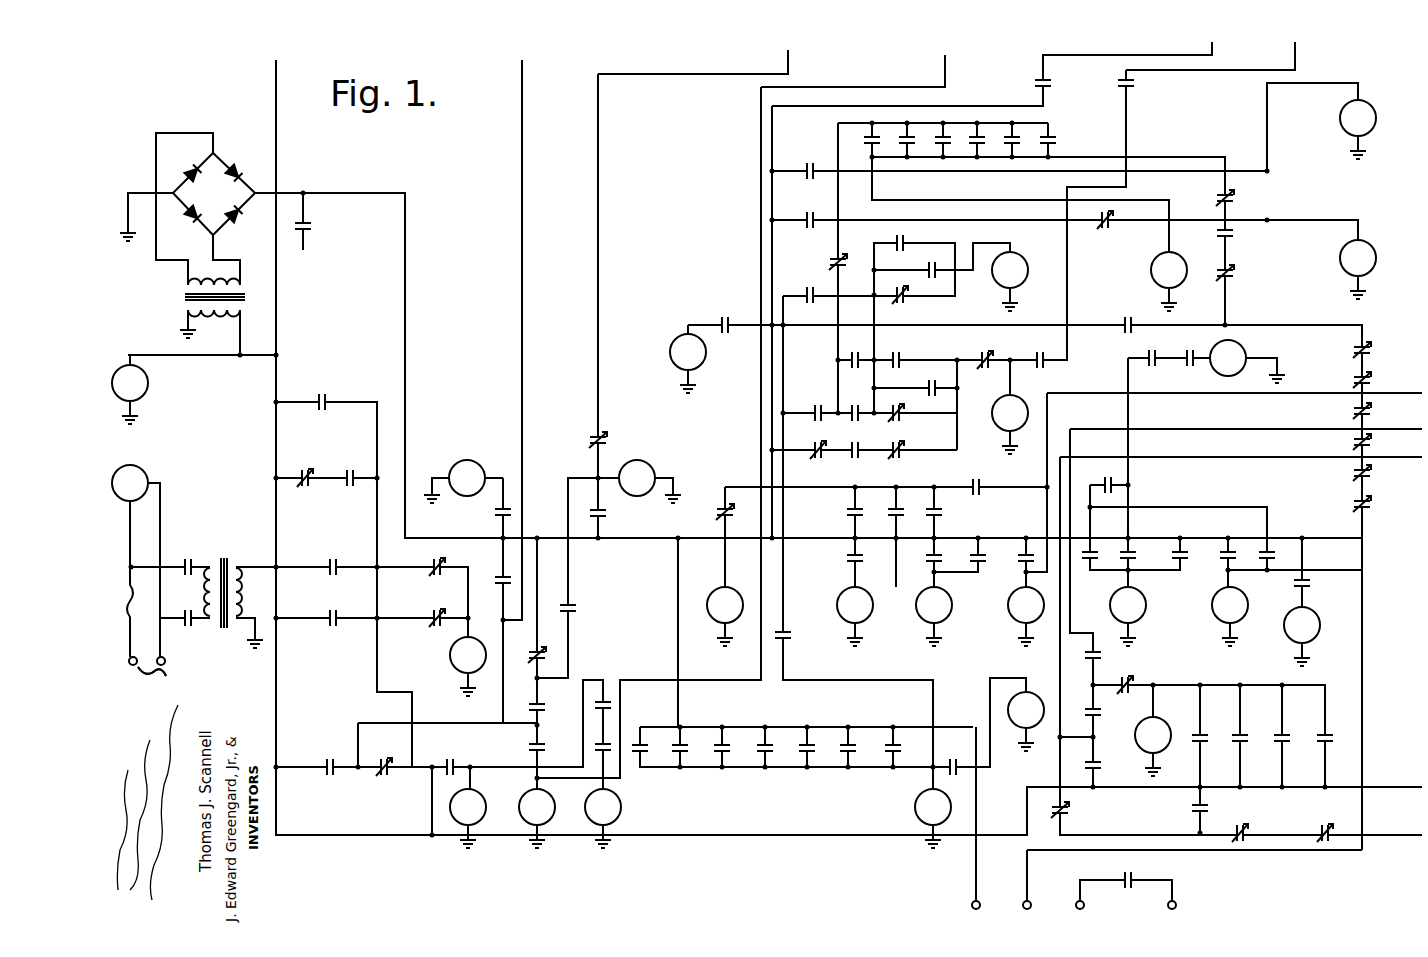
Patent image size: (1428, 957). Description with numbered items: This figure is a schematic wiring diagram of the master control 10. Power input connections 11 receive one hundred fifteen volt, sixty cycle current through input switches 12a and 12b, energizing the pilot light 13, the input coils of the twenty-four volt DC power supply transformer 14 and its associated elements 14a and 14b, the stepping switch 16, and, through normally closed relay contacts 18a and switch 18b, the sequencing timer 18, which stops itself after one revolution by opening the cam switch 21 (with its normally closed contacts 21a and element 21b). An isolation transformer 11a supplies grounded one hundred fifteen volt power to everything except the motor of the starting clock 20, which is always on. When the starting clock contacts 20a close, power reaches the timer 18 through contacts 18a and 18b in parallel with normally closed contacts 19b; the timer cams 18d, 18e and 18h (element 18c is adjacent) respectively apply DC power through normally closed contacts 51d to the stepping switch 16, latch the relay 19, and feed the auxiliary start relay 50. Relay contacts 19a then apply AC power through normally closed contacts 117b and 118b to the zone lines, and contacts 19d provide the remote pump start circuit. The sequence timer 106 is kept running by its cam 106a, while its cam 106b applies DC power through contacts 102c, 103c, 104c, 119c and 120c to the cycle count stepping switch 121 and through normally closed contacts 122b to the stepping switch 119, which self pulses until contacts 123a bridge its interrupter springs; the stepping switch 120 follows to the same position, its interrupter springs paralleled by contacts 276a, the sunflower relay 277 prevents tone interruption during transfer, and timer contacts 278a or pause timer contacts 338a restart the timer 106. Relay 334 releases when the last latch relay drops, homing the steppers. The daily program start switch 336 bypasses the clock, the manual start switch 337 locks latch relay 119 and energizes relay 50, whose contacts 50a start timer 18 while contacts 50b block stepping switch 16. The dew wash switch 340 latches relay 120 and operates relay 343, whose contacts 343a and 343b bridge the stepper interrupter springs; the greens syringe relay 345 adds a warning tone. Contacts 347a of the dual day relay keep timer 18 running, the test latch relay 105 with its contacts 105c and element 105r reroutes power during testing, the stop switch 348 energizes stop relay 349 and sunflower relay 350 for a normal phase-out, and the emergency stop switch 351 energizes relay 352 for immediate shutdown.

The master control 10 is at (204, 504).
The power input connections 11 is at (162, 679).
The isolation transformer 11a is at (222, 559).
The input switch 12a is at (202, 533).
The input switch 12b is at (186, 628).
The pilot light 13 is at (148, 385).
The 24 volt DC power supply transformer 14 is at (185, 297).
The rectifier bridge 14a is at (208, 170).
The filter capacitor 14b is at (310, 226).
The stepping switch 16 is at (520, 801).
The sequencing timer 18 is at (452, 655).
The normally closed relay contacts 18a is at (334, 558).
The switch 18b is at (430, 559).
The capacitor 18c is at (549, 708).
The cam 18d is at (578, 609).
The cam 18e is at (969, 778).
The cam 18h is at (716, 516).
The relay 19 is at (1008, 700).
The relay contacts 19a is at (301, 468).
The normally closed contacts 19b is at (436, 638).
The contacts 19d is at (1130, 892).
The starting clock 20 is at (139, 470).
The starting clock contacts 20a is at (333, 744).
The cam switch 21 is at (450, 806).
The normally closed contacts 21a is at (398, 744).
The capacitor 21b is at (456, 756).
The auxiliary start relay 50 is at (718, 594).
The normally open contacts 50a is at (320, 394).
The normally closed contacts 50b is at (552, 656).
The normally closed contacts 51d is at (588, 441).
The normally open contacts 102c is at (866, 142).
The normally open contacts 103c is at (904, 150).
The normally open contacts 104c is at (940, 150).
The latch relay 105 is at (474, 450).
The contacts 105c is at (990, 150).
The tube 105r is at (1344, 120).
The sequence timer 106 is at (1142, 736).
The cam 106a is at (1192, 744).
The cam 106b is at (818, 406).
The normally closed contacts 117b is at (1240, 842).
The normally closed contacts 118b is at (1324, 842).
The stepping switch 119 is at (866, 604).
The contacts 119c is at (1024, 137).
The stepping switch 120 is at (948, 604).
The contacts 120c is at (1054, 142).
The cycle count stepping switch 121 is at (1154, 270).
The normally closed contacts 122b is at (986, 352).
The contacts 123a is at (892, 350).
The contacts 276a is at (906, 238).
The sunflower relay 277 is at (1310, 624).
The timer contacts 278a is at (1248, 746).
The relay 334 is at (920, 806).
The daily program start switch 336 is at (332, 610).
The manual start switch 337 is at (848, 560).
The pause timer contacts 338a is at (1294, 744).
The dew wash switch 340 is at (926, 559).
The relay 343 is at (669, 351).
The contacts 343a is at (926, 378).
The contacts 343b is at (935, 286).
The relay 345 is at (1015, 617).
The relay contacts 347a is at (640, 463).
The stop switch 348 is at (1134, 546).
The stop relay 349 is at (1144, 609).
The sunflower relay 350 is at (1244, 354).
The emergency stop switch 351 is at (1230, 544).
The relay 352 is at (1218, 613).